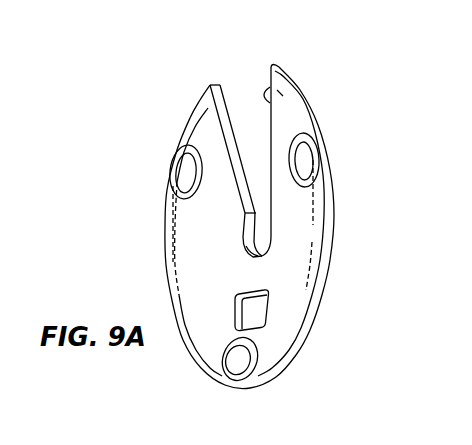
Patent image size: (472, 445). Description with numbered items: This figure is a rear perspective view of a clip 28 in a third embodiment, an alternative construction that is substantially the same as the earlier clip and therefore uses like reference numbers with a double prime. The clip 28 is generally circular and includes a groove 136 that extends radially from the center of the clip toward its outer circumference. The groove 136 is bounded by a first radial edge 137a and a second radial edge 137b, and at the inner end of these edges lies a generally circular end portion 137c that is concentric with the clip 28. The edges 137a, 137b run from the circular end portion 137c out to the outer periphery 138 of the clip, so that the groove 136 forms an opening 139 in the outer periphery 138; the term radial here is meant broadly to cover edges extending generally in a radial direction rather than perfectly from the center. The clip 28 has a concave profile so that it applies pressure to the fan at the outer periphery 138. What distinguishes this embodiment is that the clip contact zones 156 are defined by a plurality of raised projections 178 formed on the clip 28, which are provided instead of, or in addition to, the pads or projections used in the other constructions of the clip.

The clip 28 is at (348, 92).
The groove 136 is at (222, 105).
The first radial edge 137a is at (276, 74).
The second radial edge 137b is at (250, 171).
The circular end portion 137c is at (246, 238).
The outer periphery 138 is at (310, 281).
The opening 139 is at (218, 84).
The clip contact zones 156 is at (187, 150).
The raised projections 178 is at (180, 177).